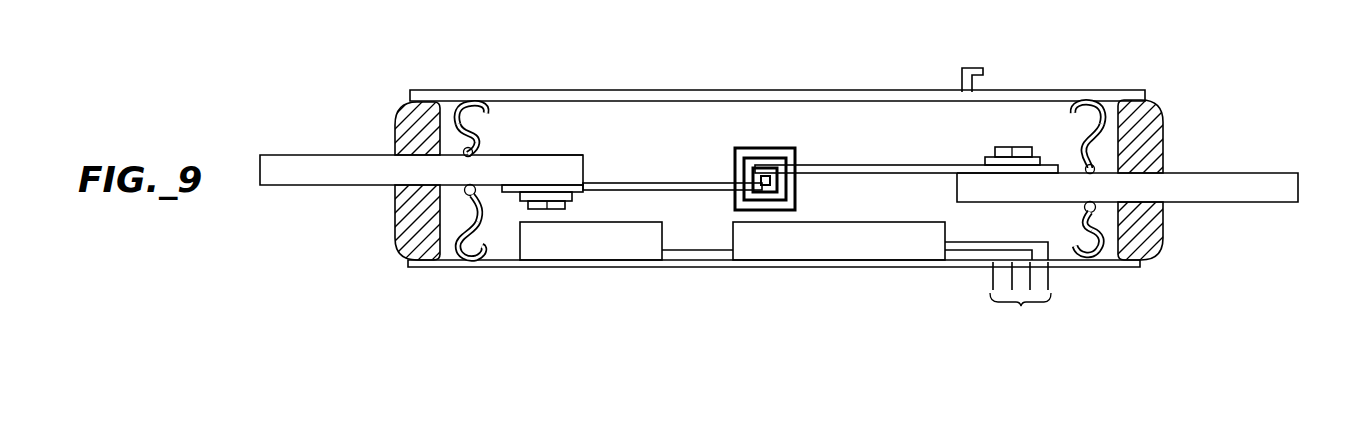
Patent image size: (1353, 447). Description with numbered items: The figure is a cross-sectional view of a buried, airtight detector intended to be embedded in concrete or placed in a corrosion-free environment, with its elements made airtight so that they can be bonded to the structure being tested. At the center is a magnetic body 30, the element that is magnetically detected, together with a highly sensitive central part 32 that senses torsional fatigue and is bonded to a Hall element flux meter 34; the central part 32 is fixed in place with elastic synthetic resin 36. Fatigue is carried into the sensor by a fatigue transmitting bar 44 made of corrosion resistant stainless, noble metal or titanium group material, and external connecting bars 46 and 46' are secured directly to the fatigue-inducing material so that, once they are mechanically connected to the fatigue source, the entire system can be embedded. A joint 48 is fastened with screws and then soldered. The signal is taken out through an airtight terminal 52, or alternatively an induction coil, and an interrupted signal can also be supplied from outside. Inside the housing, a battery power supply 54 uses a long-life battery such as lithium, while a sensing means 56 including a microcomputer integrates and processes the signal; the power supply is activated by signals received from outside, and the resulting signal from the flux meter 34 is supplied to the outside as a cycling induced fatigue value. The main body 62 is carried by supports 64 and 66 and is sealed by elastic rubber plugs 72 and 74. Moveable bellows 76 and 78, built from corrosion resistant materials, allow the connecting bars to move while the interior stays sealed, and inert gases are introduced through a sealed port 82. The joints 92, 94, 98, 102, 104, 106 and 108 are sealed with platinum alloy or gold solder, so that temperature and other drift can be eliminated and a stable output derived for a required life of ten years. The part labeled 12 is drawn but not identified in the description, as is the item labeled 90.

The card / plate 12 is at (523, 163).
The magnetic body 30 is at (817, 166).
The central part 32 is at (753, 170).
The Hall element flux meter 34 is at (738, 163).
The elastic synthetic resin 36 is at (733, 178).
The fatigue transmitting bar 44 is at (977, 190).
The external connecting bar 46 is at (421, 184).
The external connecting bar 46' is at (1127, 172).
The joint 48 is at (1015, 150).
The airtight terminal 52 is at (1020, 299).
The battery power supply 54 is at (643, 243).
The sensing means 56 is at (857, 241).
The main body 62 is at (763, 260).
The support 64 is at (1143, 92).
The support 66 is at (453, 91).
The elastic rubber plug 72 is at (1157, 130).
The elastic rubber plug 74 is at (402, 133).
The moveable bellows 76 is at (480, 208).
The moveable bellows 78 is at (1122, 262).
The sealed port 82 is at (968, 66).
The lower right spring 90 is at (1112, 215).
The joint 92 is at (1082, 100).
The joint 94 is at (1107, 140).
The joint 98 is at (1085, 263).
The joint 102 is at (473, 263).
The joint 104 is at (477, 150).
The joint 106 is at (476, 100).
The joint 108 is at (443, 258).